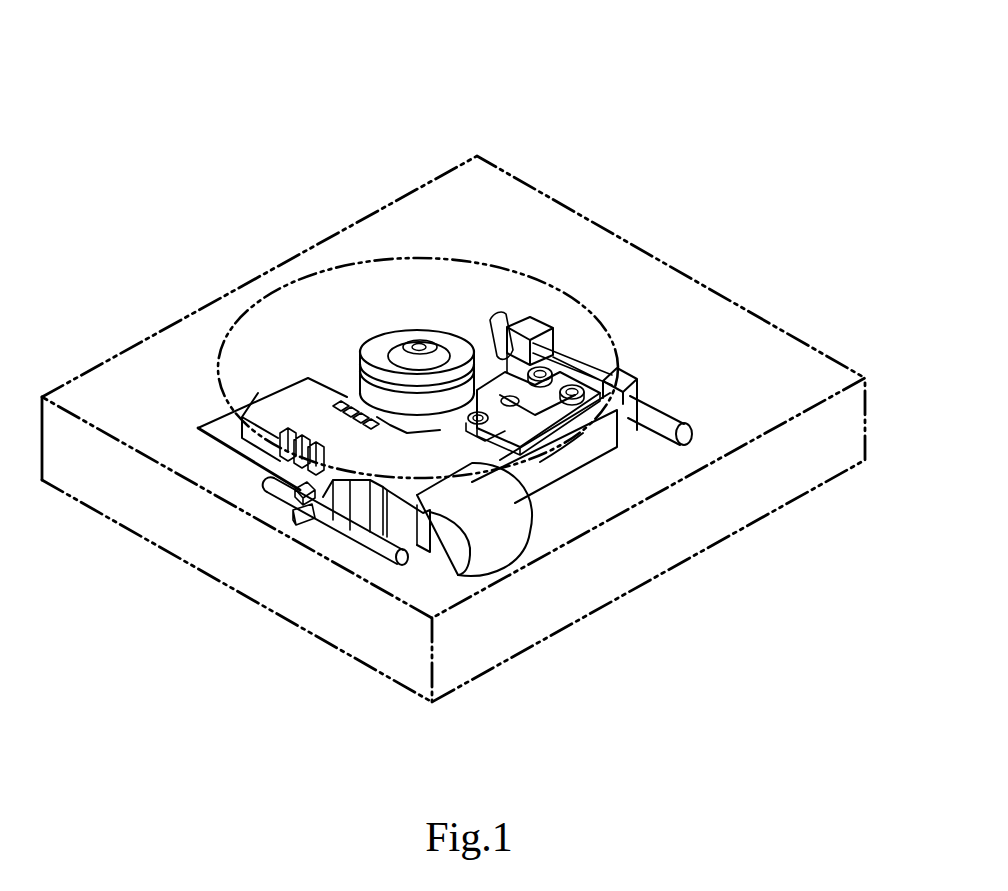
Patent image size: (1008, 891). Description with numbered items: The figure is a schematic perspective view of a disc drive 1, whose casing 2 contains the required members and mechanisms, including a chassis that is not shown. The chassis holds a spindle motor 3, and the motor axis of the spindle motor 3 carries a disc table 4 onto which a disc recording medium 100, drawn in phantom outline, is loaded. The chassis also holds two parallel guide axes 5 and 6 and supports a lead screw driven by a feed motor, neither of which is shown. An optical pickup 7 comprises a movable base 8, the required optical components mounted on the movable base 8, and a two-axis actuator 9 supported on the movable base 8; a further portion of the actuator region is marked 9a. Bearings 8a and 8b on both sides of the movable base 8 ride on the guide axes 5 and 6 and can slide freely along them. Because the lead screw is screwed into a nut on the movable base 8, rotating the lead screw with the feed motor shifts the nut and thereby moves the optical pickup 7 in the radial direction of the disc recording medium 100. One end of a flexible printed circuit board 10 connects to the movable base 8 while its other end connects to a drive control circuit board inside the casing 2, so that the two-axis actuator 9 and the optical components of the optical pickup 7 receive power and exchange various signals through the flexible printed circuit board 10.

The disc drive 1 is at (633, 146).
The casing 2 is at (738, 303).
The spindle motor 3 is at (347, 398).
The disc table 4 is at (394, 338).
The guide axis 5 is at (382, 543).
The guide axis 6 is at (670, 423).
The optical pickup 7 is at (570, 457).
The movable base 8 is at (600, 448).
The bearing 8a is at (300, 520).
The bearing 8b is at (538, 322).
The two-axis actuator 9 is at (475, 392).
The pickup bearing portion 9a is at (487, 390).
The flexible printed circuit board 10 is at (505, 533).
The disc recording medium 100 is at (337, 267).